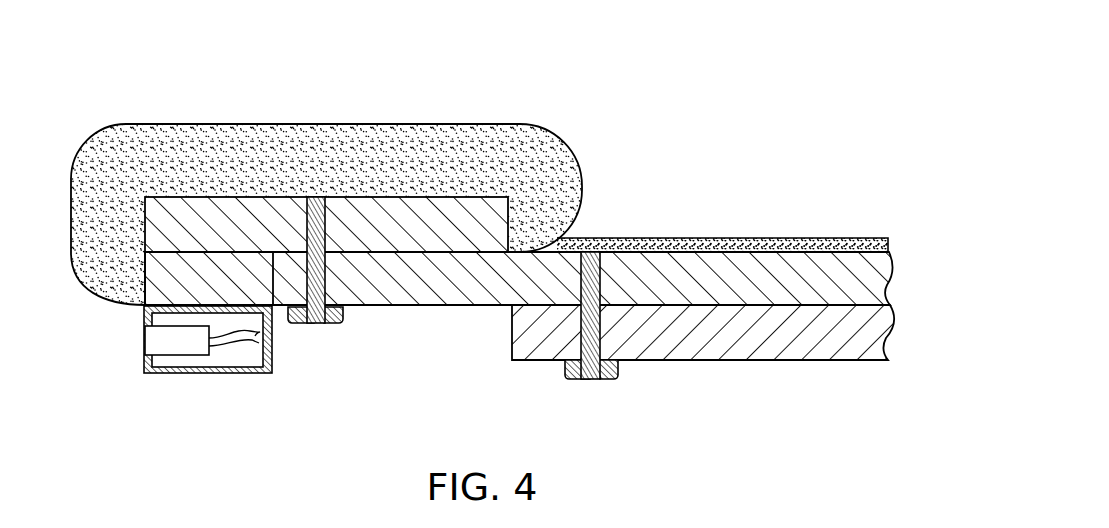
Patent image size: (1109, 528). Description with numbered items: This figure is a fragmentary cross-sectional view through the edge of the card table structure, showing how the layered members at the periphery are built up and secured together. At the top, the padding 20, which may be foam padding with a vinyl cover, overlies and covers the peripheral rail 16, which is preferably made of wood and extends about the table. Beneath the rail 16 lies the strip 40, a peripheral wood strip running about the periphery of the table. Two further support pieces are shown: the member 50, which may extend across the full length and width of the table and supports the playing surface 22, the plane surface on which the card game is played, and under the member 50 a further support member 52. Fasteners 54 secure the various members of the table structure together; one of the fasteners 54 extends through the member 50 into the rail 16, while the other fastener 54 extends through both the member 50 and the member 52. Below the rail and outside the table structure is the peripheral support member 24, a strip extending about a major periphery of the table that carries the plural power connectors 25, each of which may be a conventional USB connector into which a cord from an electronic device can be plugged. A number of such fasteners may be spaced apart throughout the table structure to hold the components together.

The peripheral rail 16 is at (410, 215).
The padding 20 is at (245, 158).
The plane surface 22 is at (762, 248).
The peripheral support member 24 is at (255, 378).
The power connector 25 is at (148, 342).
The peripheral wood strip 40 is at (160, 280).
The support member 50 is at (445, 275).
The further support member 52 is at (765, 353).
The fastener 54 is at (313, 323).